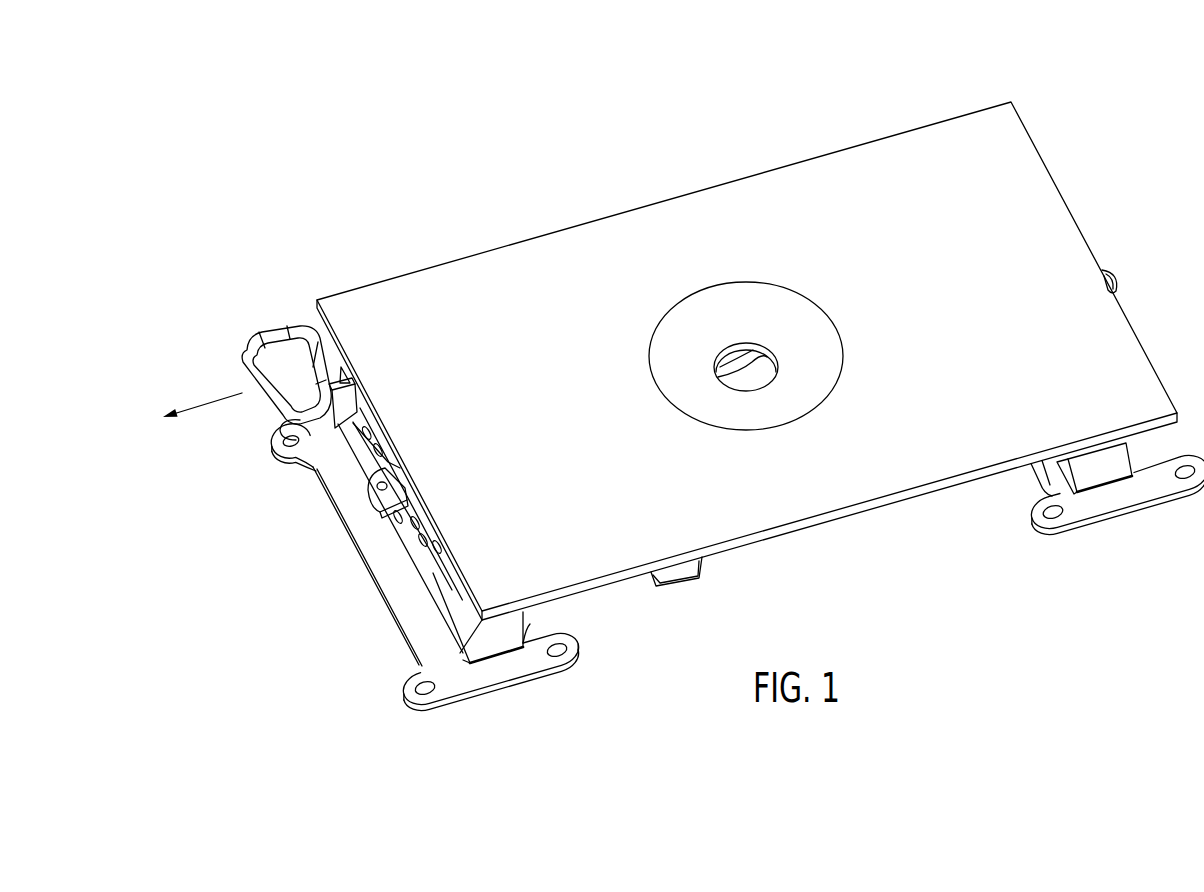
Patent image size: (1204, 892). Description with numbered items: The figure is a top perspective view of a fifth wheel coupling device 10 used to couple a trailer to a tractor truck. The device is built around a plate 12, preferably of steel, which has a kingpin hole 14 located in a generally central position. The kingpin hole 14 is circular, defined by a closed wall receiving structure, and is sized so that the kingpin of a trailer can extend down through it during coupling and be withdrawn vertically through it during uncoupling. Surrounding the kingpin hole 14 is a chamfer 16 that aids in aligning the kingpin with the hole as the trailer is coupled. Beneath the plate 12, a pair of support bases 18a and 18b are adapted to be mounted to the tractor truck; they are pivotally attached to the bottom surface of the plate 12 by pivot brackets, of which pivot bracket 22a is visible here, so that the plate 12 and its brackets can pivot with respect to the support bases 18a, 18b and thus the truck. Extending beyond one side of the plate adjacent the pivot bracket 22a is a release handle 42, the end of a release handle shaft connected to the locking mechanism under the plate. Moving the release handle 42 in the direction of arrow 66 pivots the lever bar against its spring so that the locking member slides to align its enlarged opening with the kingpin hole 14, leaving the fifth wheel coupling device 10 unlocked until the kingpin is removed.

The fifth wheel coupling device 10 is at (596, 132).
The plate 12 is at (785, 183).
The kingpin hole 14 is at (752, 393).
The chamfer 16 is at (691, 317).
The support base 18a is at (452, 680).
The support base 18b is at (1128, 497).
The pivot bracket 22a is at (403, 530).
The release handle 42 is at (273, 330).
The arrow 66 is at (207, 398).